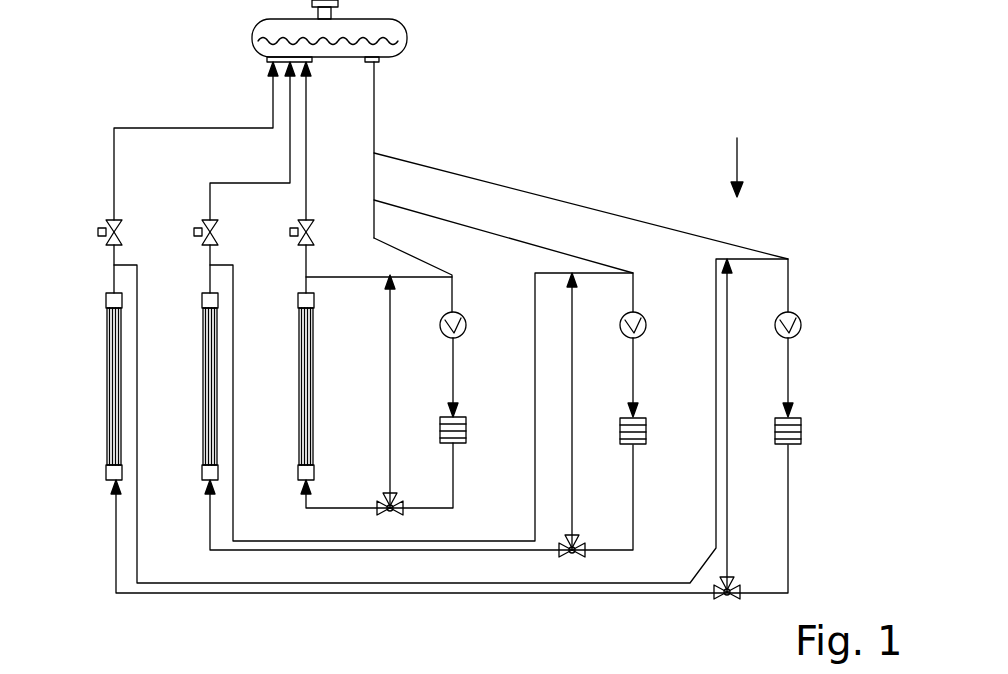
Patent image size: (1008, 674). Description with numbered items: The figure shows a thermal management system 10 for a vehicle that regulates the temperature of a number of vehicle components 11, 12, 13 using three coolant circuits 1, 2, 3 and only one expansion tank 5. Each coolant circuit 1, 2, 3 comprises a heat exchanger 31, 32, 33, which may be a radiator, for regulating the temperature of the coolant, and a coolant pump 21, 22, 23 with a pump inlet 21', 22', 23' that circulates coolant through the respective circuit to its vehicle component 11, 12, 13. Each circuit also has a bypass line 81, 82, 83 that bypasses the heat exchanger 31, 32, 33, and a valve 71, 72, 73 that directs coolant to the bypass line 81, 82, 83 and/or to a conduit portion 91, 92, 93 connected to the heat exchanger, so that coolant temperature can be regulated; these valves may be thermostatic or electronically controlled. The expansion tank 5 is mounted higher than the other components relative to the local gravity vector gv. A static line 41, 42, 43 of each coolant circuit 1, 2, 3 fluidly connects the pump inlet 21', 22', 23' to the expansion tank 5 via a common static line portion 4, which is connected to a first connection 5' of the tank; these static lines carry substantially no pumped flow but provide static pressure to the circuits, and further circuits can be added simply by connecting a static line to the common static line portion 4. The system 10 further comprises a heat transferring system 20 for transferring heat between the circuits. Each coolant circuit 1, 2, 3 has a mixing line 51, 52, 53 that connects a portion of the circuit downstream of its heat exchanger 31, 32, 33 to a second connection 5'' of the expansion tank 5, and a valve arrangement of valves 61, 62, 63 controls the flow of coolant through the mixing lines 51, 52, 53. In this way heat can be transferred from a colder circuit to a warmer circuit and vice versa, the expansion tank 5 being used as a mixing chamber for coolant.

The thermal management system 10 is at (740, 83).
The heat transferring system 20 is at (121, 86).
The local gravity vector gv is at (739, 155).
The expansion tank 5 is at (357, 28).
The first connection 5' is at (405, 71).
The second connection 5'' is at (261, 69).
The common static line portion 4 is at (376, 122).
The static line 41 is at (412, 256).
The static line 42 is at (508, 238).
The static line 43 is at (566, 203).
The mixing line 51 is at (307, 141).
The mixing line 52 is at (239, 183).
The mixing line 53 is at (114, 168).
The valve 61 is at (290, 233).
The valve 62 is at (194, 233).
The valve 63 is at (98, 233).
The heat exchanger 31 is at (308, 386).
The heat exchanger 32 is at (212, 386).
The heat exchanger 33 is at (117, 386).
The bypass line 81 is at (391, 366).
The bypass line 82 is at (573, 366).
The bypass line 83 is at (729, 366).
The conduit portion 91 is at (347, 508).
The conduit portion 92 is at (263, 550).
The conduit portion 93 is at (167, 593).
The coolant pump 21 is at (479, 327).
The coolant pump 22 is at (657, 327).
The coolant pump 23 is at (814, 327).
The pump inlet 21' is at (493, 292).
The pump inlet 22' is at (671, 292).
The pump inlet 23' is at (828, 292).
The coolant circuit 1 is at (455, 371).
The coolant circuit 2 is at (635, 371).
The coolant circuit 3 is at (790, 371).
The vehicle component 11 is at (466, 425).
The vehicle component 12 is at (646, 426).
The vehicle component 13 is at (801, 426).
The valve 71 is at (394, 504).
The valve 72 is at (576, 546).
The valve 73 is at (731, 588).